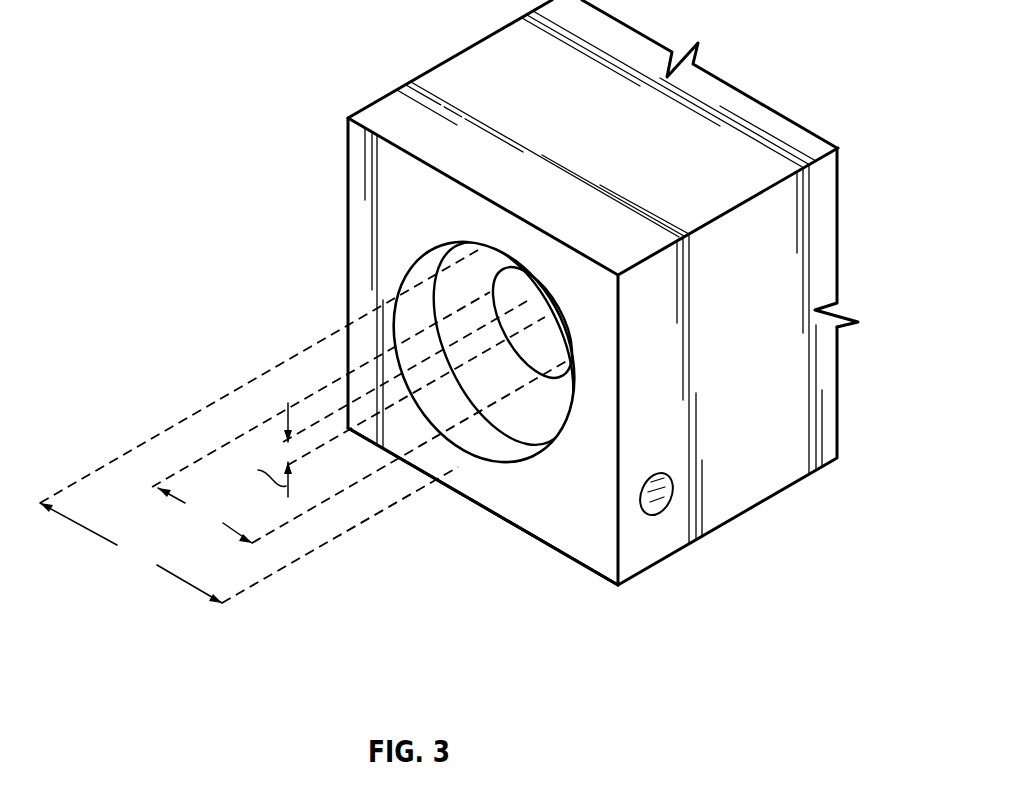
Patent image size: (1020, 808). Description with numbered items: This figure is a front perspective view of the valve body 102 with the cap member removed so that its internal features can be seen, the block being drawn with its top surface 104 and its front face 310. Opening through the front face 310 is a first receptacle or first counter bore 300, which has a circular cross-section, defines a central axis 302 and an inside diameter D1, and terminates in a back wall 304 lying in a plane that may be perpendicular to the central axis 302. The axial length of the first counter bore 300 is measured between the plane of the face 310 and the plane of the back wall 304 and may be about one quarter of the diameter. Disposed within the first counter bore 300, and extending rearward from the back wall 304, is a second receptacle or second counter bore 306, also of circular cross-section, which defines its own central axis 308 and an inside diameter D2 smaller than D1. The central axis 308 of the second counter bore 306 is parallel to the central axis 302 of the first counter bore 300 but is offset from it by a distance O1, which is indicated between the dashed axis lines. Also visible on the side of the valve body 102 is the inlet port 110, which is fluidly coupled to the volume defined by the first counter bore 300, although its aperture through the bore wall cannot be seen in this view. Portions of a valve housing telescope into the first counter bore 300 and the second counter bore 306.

The valve body 102 is at (449, 301).
The top surface 104 is at (591, 137).
The inlet port 110 is at (672, 493).
The first counter bore 300 is at (408, 284).
The central axis 302 is at (332, 438).
The back wall 304 is at (516, 392).
The second counter bore 306 is at (503, 281).
The central axis 308 is at (320, 420).
The face 310 is at (560, 507).
The inside diameter D1 is at (131, 553).
The inside diameter D2 is at (205, 515).
The offset distance O1 is at (259, 450).